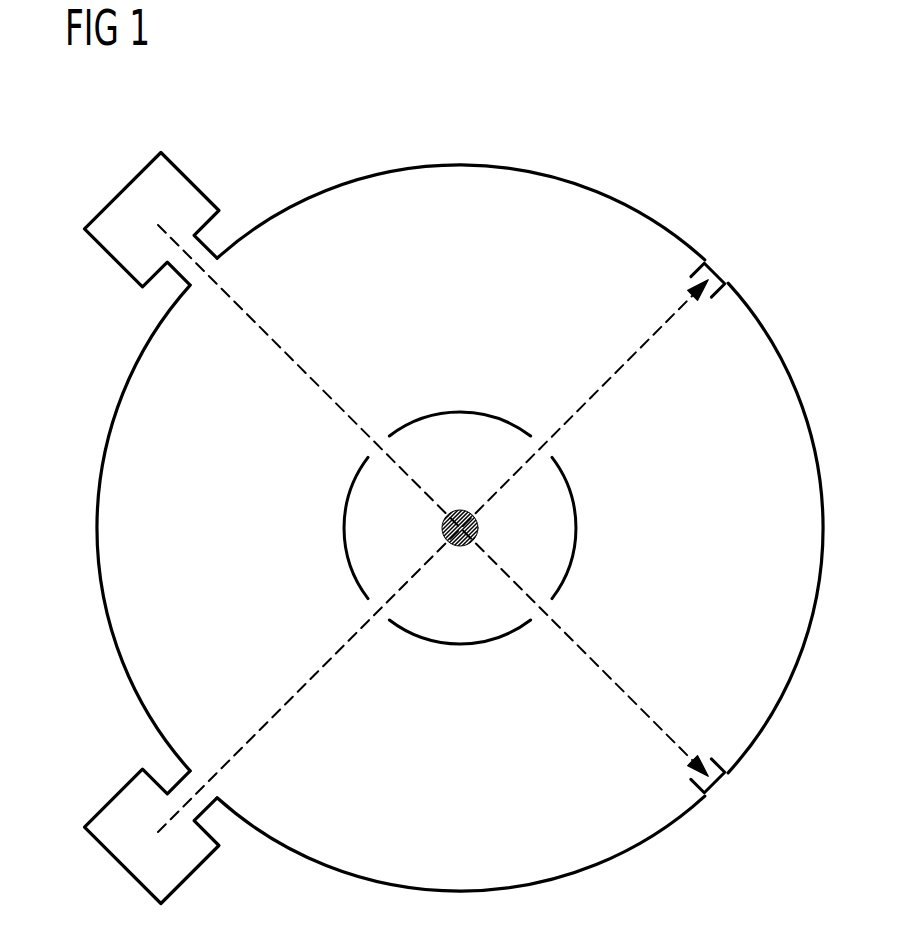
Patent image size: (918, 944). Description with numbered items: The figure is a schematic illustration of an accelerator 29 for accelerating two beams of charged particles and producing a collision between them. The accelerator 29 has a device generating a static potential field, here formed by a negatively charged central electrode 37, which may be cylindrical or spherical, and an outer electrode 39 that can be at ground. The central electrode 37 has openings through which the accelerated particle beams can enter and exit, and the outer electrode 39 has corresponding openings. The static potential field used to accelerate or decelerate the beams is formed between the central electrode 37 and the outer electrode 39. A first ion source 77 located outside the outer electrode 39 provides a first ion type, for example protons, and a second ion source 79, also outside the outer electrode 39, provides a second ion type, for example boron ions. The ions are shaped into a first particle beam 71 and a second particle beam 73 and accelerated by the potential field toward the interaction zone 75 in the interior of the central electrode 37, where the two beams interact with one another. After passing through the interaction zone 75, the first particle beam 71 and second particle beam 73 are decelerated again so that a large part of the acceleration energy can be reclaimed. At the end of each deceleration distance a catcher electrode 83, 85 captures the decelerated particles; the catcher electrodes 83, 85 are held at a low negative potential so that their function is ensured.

The accelerator 29 is at (682, 155).
The outer electrode 39 is at (498, 163).
The central electrode 37 is at (465, 647).
The interaction zone 75 is at (475, 525).
The first particle beam 71 is at (622, 365).
The second particle beam 73 is at (613, 682).
The first ion source 77 is at (124, 871).
The second ion source 79 is at (122, 188).
The catcher electrode 83 is at (718, 270).
The catcher electrode 85 is at (718, 787).